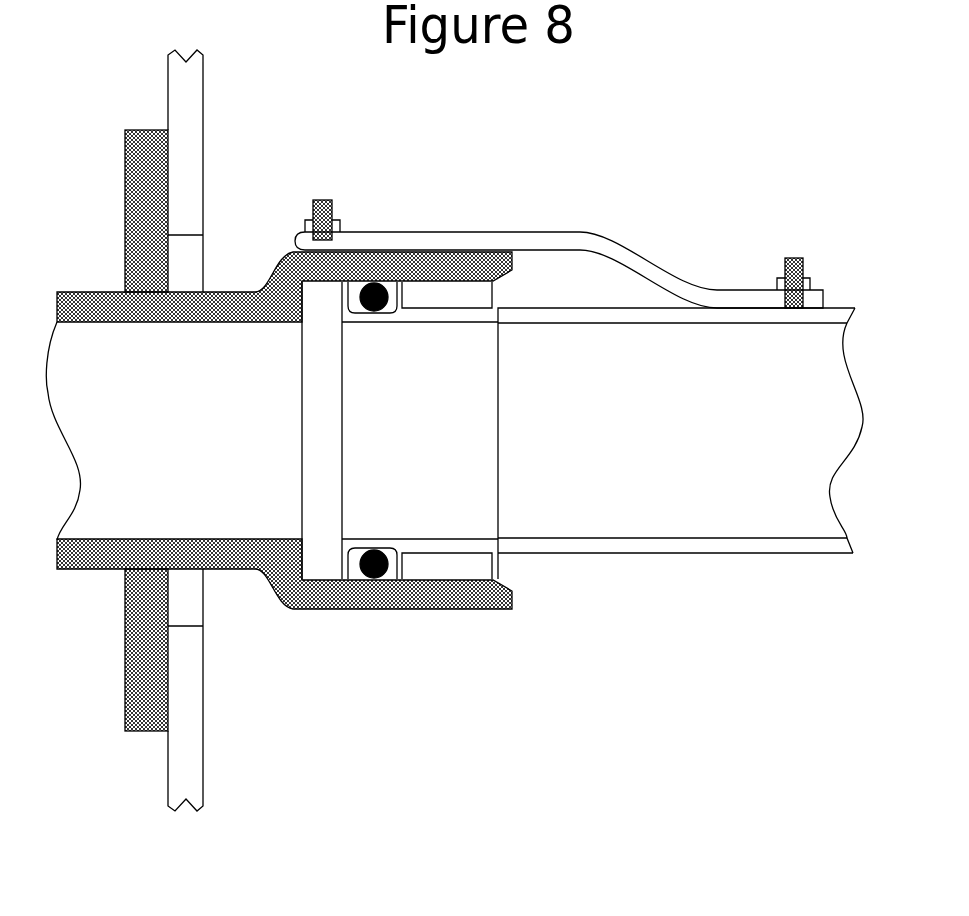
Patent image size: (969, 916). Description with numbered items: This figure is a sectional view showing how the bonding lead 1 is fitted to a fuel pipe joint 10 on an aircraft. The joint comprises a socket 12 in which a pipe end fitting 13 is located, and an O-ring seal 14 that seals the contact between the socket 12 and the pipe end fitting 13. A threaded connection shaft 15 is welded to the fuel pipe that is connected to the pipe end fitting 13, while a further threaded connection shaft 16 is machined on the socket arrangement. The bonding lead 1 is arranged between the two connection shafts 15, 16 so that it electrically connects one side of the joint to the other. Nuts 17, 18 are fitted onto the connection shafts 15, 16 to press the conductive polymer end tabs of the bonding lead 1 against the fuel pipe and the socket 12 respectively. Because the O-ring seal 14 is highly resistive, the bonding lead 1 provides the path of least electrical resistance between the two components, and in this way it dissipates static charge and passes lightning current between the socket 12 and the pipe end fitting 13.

The bonding lead 1 is at (455, 238).
The fuel pipe joint 10 is at (587, 632).
The socket 12 is at (383, 610).
The pipe end fitting 13 is at (457, 538).
The O-ring seal 14 is at (370, 555).
The threaded connection shaft 15 is at (785, 258).
The further threaded connection shaft 16 is at (315, 200).
The nut 17 is at (807, 285).
The nut 18 is at (338, 223).